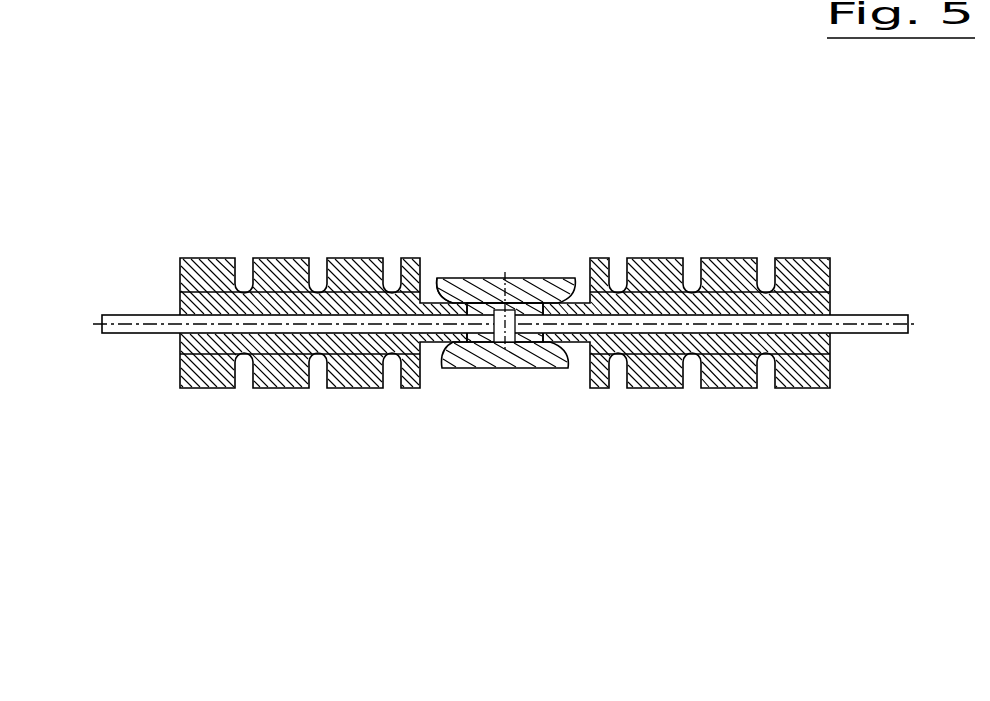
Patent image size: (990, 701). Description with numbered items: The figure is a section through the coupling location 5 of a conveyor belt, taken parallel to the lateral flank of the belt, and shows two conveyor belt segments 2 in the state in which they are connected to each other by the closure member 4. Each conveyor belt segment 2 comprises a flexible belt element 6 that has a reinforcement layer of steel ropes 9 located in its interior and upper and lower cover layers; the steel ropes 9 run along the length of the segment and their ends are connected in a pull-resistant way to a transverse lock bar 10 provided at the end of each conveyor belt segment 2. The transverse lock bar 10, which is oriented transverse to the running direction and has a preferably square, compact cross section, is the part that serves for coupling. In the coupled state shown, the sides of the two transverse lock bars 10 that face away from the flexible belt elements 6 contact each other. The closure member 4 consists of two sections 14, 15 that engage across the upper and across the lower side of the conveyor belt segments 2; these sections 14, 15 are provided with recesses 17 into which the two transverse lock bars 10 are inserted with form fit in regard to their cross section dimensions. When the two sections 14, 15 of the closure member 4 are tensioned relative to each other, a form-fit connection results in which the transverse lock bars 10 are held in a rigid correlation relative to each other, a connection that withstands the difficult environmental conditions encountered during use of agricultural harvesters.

The conveyor belt segment 2 is at (201, 236).
The closure member 4 is at (474, 246).
The coupling location 5 is at (522, 144).
The flexible belt element 6 is at (195, 387).
The steel rope 9 is at (110, 333).
The transverse lock bar 10 is at (475, 338).
The section of the closure member 14 is at (548, 278).
The section of the closure member 15 is at (553, 368).
The recess 17 is at (482, 278).